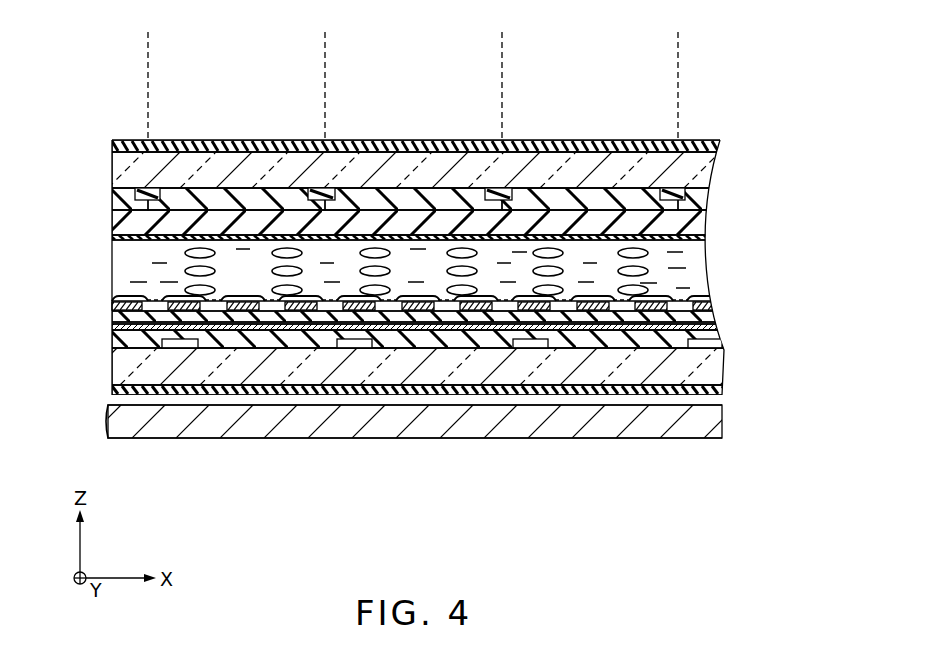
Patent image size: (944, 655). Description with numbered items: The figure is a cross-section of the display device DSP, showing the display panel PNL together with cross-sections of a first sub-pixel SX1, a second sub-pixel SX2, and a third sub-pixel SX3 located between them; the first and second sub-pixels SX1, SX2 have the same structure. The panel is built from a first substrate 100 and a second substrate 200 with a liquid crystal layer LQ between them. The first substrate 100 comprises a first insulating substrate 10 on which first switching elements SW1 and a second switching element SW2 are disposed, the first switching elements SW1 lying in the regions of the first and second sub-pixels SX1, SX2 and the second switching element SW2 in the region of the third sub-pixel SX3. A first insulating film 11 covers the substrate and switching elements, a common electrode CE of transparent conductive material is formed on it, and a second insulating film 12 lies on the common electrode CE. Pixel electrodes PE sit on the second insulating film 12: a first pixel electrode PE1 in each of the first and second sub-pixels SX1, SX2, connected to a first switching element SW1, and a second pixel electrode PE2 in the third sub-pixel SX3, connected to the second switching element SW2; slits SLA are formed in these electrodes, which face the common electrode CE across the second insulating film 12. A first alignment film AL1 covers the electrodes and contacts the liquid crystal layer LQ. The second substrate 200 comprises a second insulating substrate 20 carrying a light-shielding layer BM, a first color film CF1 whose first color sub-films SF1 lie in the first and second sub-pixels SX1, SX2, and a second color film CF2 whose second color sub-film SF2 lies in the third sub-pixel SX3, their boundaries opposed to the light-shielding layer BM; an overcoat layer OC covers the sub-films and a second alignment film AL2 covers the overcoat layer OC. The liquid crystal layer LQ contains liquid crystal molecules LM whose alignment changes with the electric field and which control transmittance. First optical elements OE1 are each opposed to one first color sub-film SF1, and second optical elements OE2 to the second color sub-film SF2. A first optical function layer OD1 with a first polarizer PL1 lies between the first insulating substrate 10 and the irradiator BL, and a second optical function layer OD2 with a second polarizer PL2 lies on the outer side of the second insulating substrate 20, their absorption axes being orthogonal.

The display device DSP is at (728, 76).
The display panel PNL is at (734, 143).
The second substrate 200 is at (724, 204).
The first substrate 100 is at (458, 402).
The second optical function layer OD2 is at (381, 134).
The second polarizer PL2 is at (114, 147).
The first optical function layer OD1 is at (381, 404).
The first polarizer PL1 is at (115, 390).
The second insulating substrate 20 is at (122, 180).
The first insulating substrate 10 is at (124, 368).
The light-shielding layer BM is at (148, 189).
The first color sub-film SF1 is at (413, 144).
The second color sub-film SF2 is at (413, 144).
The first color film CF1 is at (240, 198).
The second color film CF2 is at (411, 198).
The second optical element OE2 is at (373, 249).
The first optical element OE1 is at (172, 302).
The liquid crystal molecule LM is at (408, 309).
The overcoat layer OC is at (124, 222).
The second alignment film AL2 is at (120, 238).
The first alignment film AL1 is at (122, 299).
The liquid crystal layer LQ is at (700, 268).
The pixel electrode PE is at (448, 382).
The first pixel electrode PE1 is at (287, 306).
The second pixel electrode PE2 is at (470, 306).
The slit SLA is at (622, 299).
The second insulating film 12 is at (122, 316).
The common electrode CE is at (122, 323).
The first insulating film 11 is at (122, 328).
The first switching element SW1 is at (187, 348).
The second switching element SW2 is at (365, 348).
The irradiator BL is at (115, 410).
The first sub-pixel SX1 is at (150, 67).
The second sub-pixel SX2 is at (504, 67).
The third sub-pixel SX3 is at (500, 67).